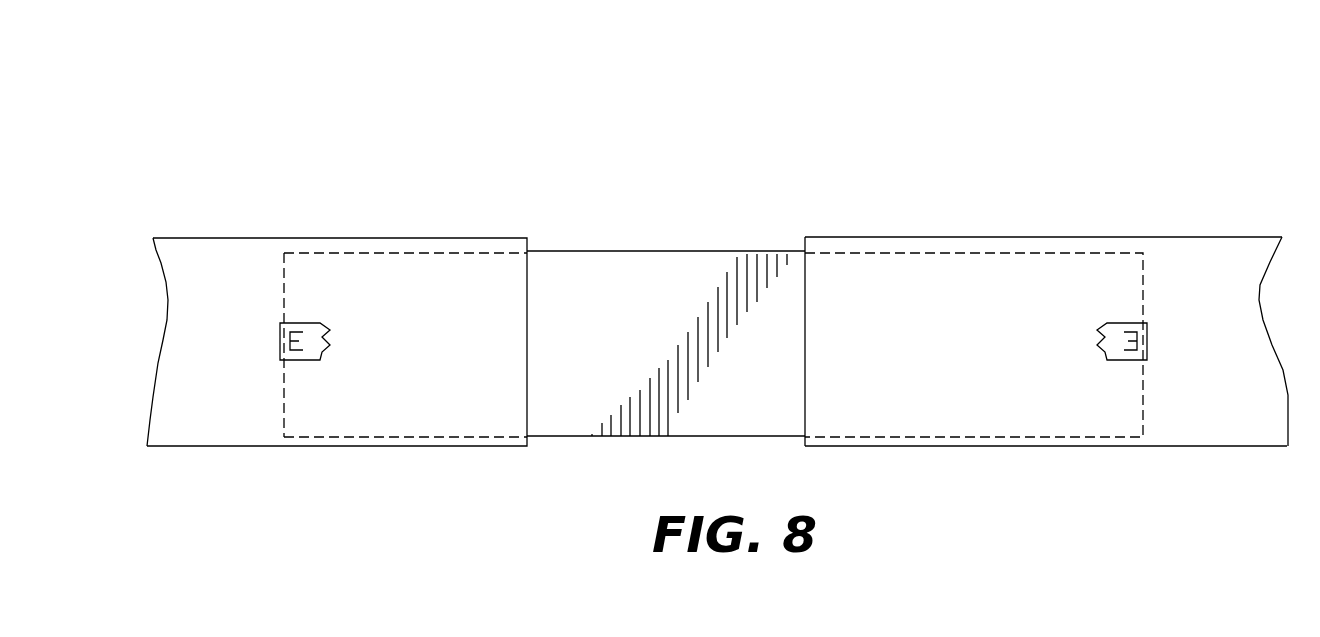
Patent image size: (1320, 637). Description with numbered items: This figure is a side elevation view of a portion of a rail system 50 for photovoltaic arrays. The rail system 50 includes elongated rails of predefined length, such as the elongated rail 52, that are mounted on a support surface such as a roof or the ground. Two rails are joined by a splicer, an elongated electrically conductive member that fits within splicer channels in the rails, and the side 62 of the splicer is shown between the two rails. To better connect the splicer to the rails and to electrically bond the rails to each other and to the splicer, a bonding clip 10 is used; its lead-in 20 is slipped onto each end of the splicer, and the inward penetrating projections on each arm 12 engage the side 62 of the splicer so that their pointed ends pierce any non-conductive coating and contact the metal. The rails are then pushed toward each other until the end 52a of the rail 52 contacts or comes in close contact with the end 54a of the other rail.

The bonding clip 10 is at (713, 348).
The arm 12 is at (306, 353).
The lead-in 20 is at (316, 321).
The rail system 50 is at (950, 96).
The elongated rail 52 is at (245, 239).
The end of rail 52a is at (528, 241).
The end of rail 54a is at (805, 241).
The side of splicer 62 is at (648, 336).